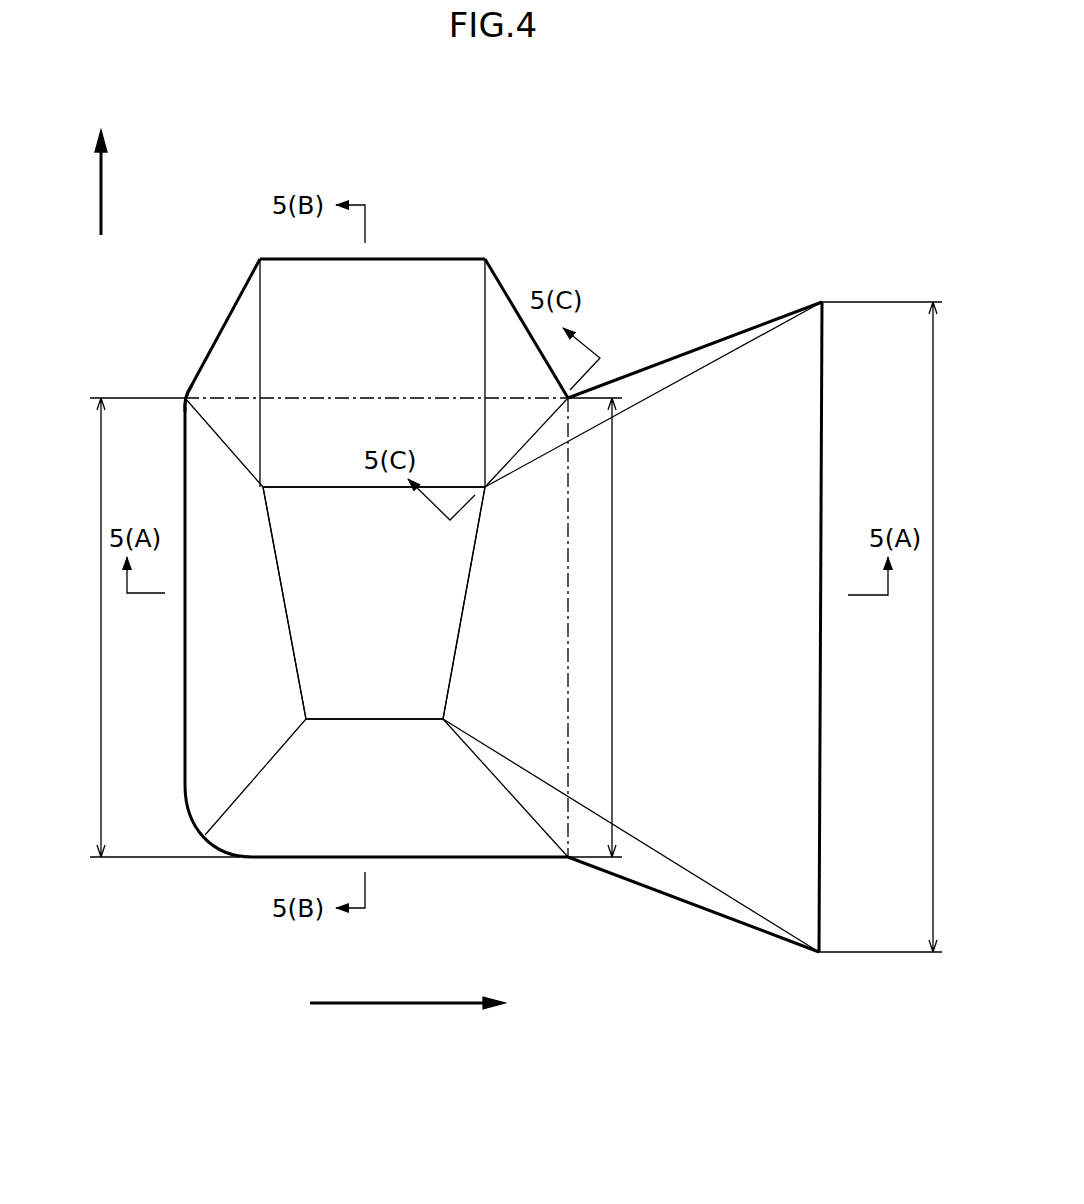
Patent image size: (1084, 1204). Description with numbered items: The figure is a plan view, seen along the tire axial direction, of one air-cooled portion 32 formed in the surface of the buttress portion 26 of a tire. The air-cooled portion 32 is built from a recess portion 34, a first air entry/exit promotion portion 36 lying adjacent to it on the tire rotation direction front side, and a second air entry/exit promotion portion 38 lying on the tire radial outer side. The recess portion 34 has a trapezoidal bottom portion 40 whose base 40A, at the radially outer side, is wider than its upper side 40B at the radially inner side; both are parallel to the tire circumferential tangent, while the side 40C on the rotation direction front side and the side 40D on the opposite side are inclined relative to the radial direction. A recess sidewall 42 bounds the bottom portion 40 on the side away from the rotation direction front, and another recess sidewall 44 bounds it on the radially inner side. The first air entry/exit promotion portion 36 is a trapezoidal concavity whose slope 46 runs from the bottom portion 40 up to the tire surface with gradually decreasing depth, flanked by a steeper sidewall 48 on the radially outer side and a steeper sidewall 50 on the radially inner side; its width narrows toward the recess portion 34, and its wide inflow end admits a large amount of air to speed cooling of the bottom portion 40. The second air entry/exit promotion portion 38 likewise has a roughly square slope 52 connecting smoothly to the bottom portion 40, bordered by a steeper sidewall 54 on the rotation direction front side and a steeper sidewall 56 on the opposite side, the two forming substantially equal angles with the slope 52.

The buttress portion 26 is at (872, 414).
The air-cooled portion 32 is at (342, 152).
The recess portion 34 is at (260, 862).
The first air entry/exit promotion portion 36 is at (638, 388).
The second air entry/exit promotion portion 38 is at (232, 310).
The bottom portion 40 is at (375, 602).
The base 40A is at (350, 488).
The upper side 40B is at (380, 719).
The side 40C is at (465, 587).
The side 40D is at (287, 600).
The recess sidewall 42 is at (232, 671).
The recess sidewall 44 is at (440, 820).
The slope 46 is at (765, 770).
The sidewall 48 is at (719, 336).
The sidewall 50 is at (638, 855).
The slope 52 is at (402, 325).
The sidewall 54 is at (497, 340).
The sidewall 56 is at (237, 373).